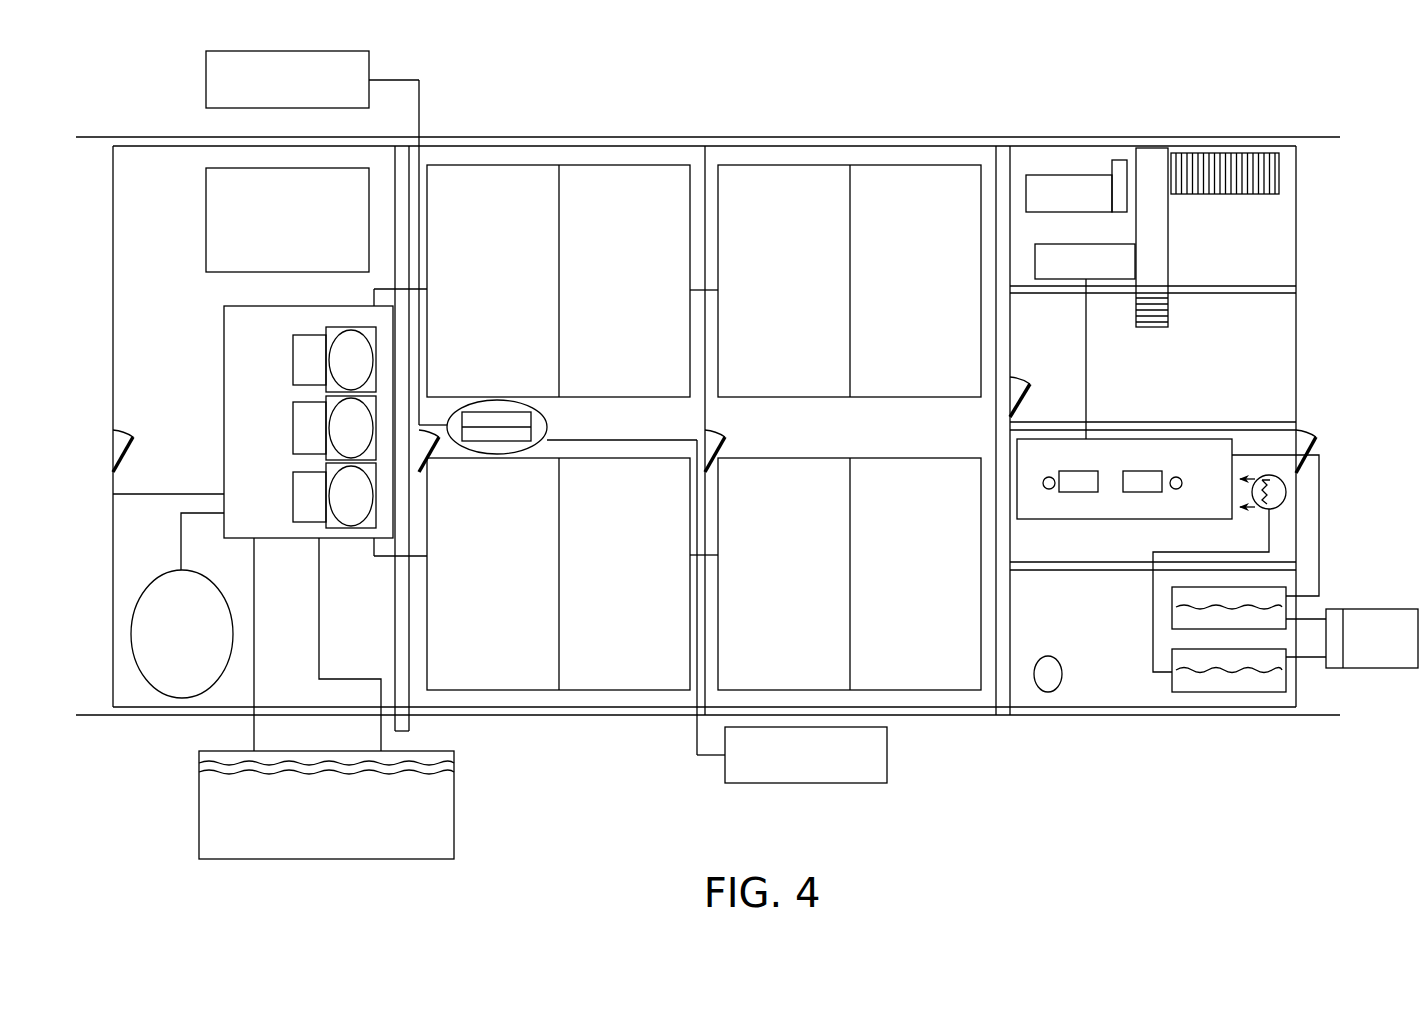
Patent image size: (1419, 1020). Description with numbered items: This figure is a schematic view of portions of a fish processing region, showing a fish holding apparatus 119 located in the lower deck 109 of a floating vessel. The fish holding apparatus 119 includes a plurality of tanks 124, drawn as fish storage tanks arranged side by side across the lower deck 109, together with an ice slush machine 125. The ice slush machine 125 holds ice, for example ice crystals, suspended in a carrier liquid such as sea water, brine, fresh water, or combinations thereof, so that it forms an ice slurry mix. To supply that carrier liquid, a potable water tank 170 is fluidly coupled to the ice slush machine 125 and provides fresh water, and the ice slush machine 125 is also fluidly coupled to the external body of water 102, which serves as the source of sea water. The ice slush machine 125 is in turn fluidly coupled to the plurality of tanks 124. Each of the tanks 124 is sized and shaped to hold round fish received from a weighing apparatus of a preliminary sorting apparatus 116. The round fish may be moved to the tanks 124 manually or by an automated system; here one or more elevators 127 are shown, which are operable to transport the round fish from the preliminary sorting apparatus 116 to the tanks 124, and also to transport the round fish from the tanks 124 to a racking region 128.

The external body of water 102 is at (264, 871).
The lower deck 109 is at (1338, 327).
The preliminary sorting apparatus 116 is at (293, 51).
The fish holding apparatus 119 is at (180, 313).
The tanks 124 is at (500, 183).
The ice slush machine 125 is at (258, 416).
The elevators 127 is at (556, 417).
The racking region 128 is at (779, 792).
The potable water tank 170 is at (136, 683).